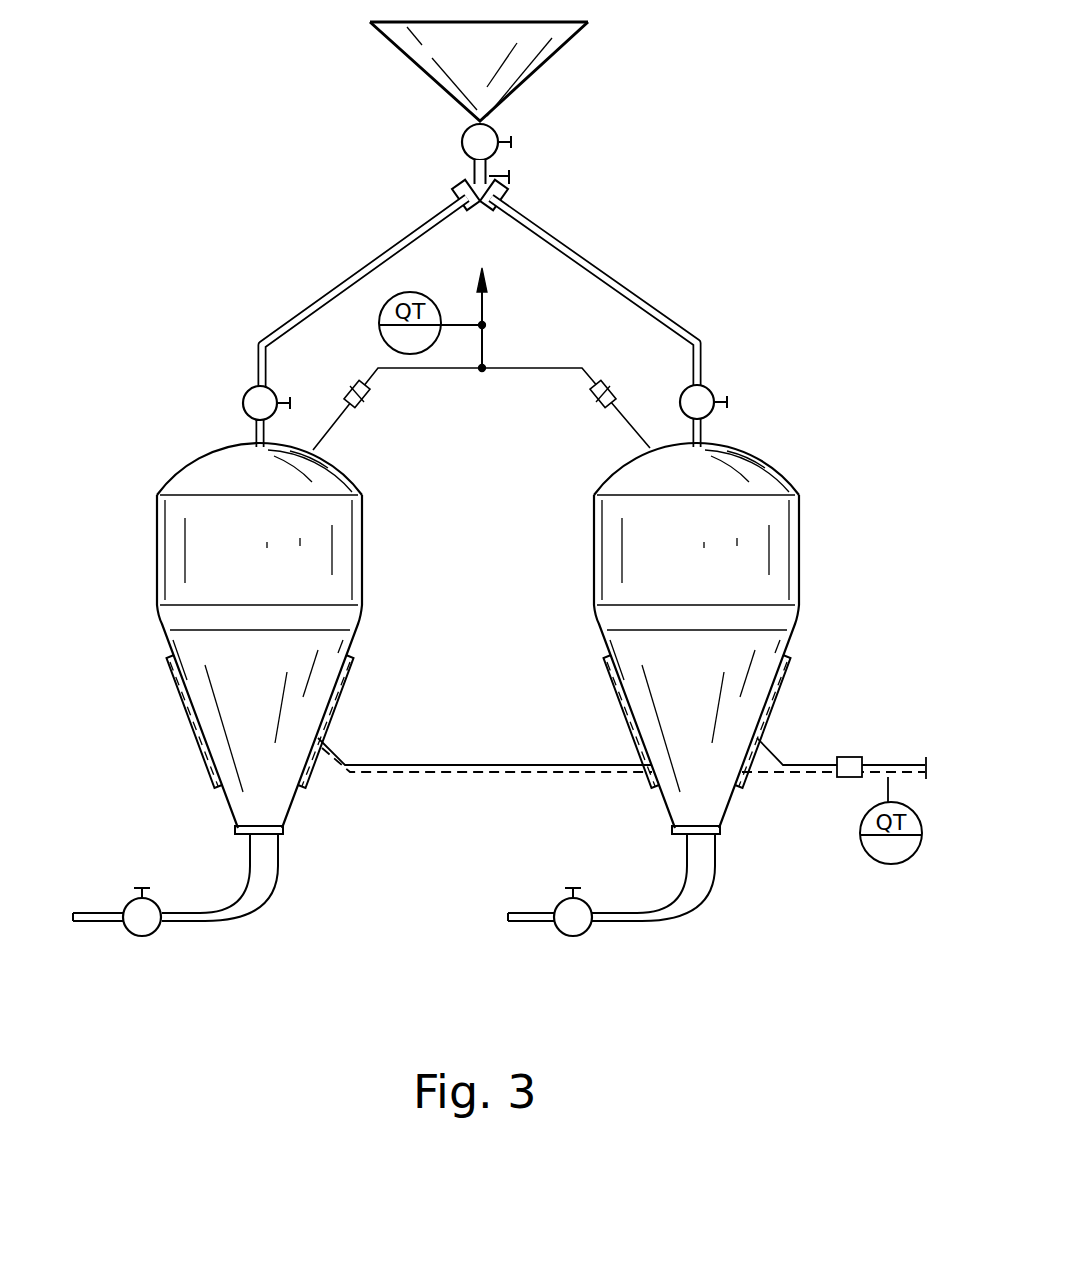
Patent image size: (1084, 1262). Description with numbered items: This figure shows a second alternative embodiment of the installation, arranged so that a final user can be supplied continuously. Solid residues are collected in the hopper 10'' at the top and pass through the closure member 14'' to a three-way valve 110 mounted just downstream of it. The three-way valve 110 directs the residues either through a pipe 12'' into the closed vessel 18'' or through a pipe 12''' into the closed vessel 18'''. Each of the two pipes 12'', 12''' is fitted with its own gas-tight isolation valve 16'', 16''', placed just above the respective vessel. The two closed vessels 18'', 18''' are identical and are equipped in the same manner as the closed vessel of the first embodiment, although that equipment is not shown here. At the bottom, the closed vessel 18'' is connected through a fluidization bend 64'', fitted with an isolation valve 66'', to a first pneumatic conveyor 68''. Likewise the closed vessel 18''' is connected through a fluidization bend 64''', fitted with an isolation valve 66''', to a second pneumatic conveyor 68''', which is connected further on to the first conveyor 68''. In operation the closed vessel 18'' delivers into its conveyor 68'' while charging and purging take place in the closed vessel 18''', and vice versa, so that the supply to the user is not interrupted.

The hopper 10'' is at (511, 71).
The closure member 14'' is at (531, 130).
The three-way valve 110 is at (492, 194).
The pipe 12'' is at (364, 294).
The pipe 12''' is at (596, 293).
The isolation valve 16'' is at (231, 407).
The isolation valve 16''' is at (754, 407).
The closed vessel 18'' is at (316, 638).
The closed vessel 18''' is at (749, 638).
The fluidization bend 64'' is at (271, 877).
The fluidization bend 64''' is at (709, 877).
The isolation valve 66'' is at (136, 954).
The isolation valve 66''' is at (578, 954).
The pneumatic conveyor 68'' is at (124, 850).
The pneumatic conveyor 68''' is at (556, 850).